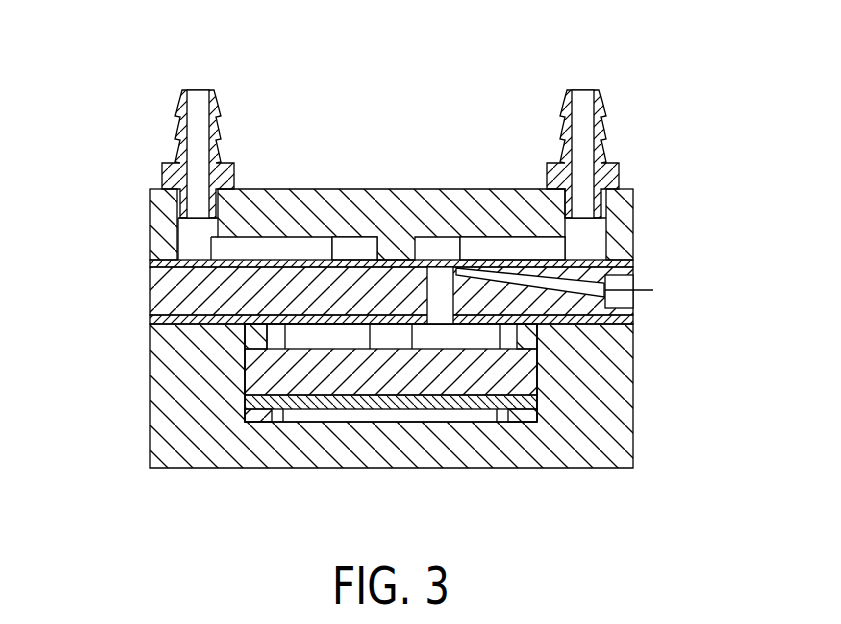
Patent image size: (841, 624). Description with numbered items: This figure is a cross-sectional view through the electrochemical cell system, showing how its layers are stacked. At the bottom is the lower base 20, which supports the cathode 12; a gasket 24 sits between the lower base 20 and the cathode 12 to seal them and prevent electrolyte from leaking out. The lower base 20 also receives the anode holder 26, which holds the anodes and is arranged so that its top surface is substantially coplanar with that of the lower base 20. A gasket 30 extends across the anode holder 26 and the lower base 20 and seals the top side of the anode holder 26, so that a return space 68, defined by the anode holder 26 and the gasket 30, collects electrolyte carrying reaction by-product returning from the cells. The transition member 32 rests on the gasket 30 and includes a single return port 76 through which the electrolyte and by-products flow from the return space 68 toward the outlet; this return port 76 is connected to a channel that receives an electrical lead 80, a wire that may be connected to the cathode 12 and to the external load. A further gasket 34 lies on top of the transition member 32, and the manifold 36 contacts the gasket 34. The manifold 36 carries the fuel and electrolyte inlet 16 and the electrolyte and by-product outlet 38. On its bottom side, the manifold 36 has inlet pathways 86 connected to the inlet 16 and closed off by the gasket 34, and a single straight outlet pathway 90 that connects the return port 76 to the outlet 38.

The cathode 12 is at (392, 405).
The fuel and electrolyte inlet 16 is at (198, 88).
The lower base 20 is at (600, 460).
The gasket 24 is at (252, 420).
The anode holder 26 is at (536, 367).
The gasket 30 is at (150, 321).
The transition member 32 is at (150, 275).
The gasket 34 is at (150, 263).
The manifold 36 is at (150, 203).
The electrolyte and by-product outlet 38 is at (584, 88).
The return space 68 is at (292, 336).
The return port 76 is at (447, 349).
The electrical lead 80 is at (653, 304).
The inlet pathways 86 is at (343, 245).
The outlet pathway 90 is at (540, 245).